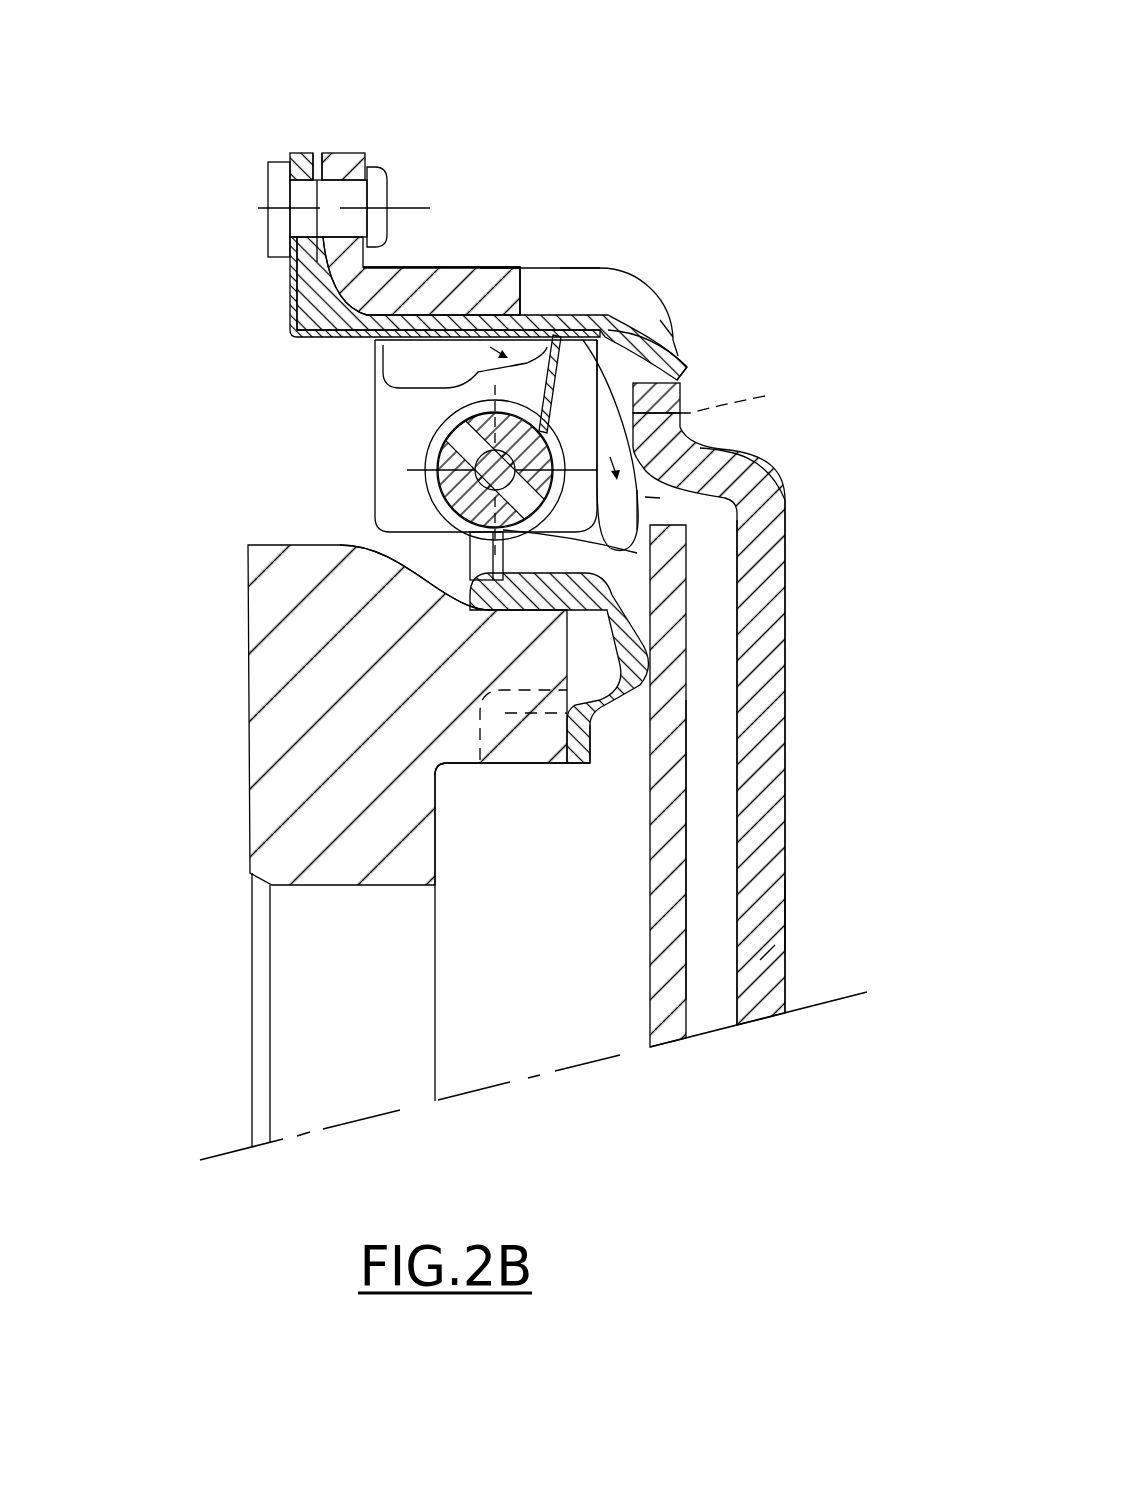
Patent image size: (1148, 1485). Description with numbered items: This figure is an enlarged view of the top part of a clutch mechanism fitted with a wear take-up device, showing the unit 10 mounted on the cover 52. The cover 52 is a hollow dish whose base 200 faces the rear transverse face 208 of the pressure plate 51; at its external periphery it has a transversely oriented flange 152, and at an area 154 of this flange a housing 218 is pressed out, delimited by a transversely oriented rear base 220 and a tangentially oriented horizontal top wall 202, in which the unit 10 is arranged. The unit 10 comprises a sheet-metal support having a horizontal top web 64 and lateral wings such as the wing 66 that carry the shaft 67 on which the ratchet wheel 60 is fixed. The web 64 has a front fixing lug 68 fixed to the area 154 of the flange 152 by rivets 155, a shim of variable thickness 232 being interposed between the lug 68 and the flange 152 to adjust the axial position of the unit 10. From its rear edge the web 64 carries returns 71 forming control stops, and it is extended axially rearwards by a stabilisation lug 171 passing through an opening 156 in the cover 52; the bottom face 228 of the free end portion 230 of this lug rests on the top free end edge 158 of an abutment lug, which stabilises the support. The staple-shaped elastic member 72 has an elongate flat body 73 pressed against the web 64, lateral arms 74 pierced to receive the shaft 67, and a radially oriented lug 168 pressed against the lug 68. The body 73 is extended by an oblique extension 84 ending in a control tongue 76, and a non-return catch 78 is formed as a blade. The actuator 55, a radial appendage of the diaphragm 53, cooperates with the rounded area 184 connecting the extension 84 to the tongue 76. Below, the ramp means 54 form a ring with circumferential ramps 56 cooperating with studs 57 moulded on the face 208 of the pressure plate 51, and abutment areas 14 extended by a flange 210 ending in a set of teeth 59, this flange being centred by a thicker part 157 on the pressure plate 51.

The unit 10 is at (272, 415).
The abutment areas 14 is at (650, 660).
The pressure plate 51 is at (250, 820).
The cover 52 is at (802, 903).
The diaphragm 53 is at (698, 860).
The ramp means 54 is at (616, 730).
The actuator 55 is at (645, 500).
The ramps 56 is at (473, 730).
The studs 57 is at (527, 740).
The set of teeth 59 is at (468, 570).
The ratchet wheel 60 is at (420, 420).
The top web 64 is at (460, 312).
The lateral wing 66 is at (387, 487).
The shaft 67 is at (445, 450).
The front fixing lug 68 is at (290, 284).
The returns 71 is at (738, 394).
The elastic member 72 is at (546, 330).
The elongate flat body 73 is at (337, 345).
The lateral arm 74 is at (421, 310).
The control tongue 76 is at (580, 557).
The non-return catch 78 is at (575, 280).
The oblique extension 84 is at (770, 478).
The flange 152 is at (342, 145).
The area 154 is at (353, 153).
The rivets 155 is at (390, 193).
The opening 156 is at (584, 258).
The thicker part 157 is at (483, 633).
The top free end edge 158 is at (683, 338).
The radially oriented lug 168 is at (292, 158).
The stabilisation lug 171 is at (690, 350).
The rounded area 184 is at (640, 510).
The base 200 is at (765, 962).
The horizontal top wall 202 is at (500, 263).
The rear transverse face 208 is at (440, 845).
The flange 210 is at (480, 660).
The housing 218 is at (730, 452).
The rear base 220 is at (683, 424).
The bottom face 228 is at (683, 403).
The free end portion 230 is at (687, 370).
The shim of variable thickness 232 is at (318, 150).